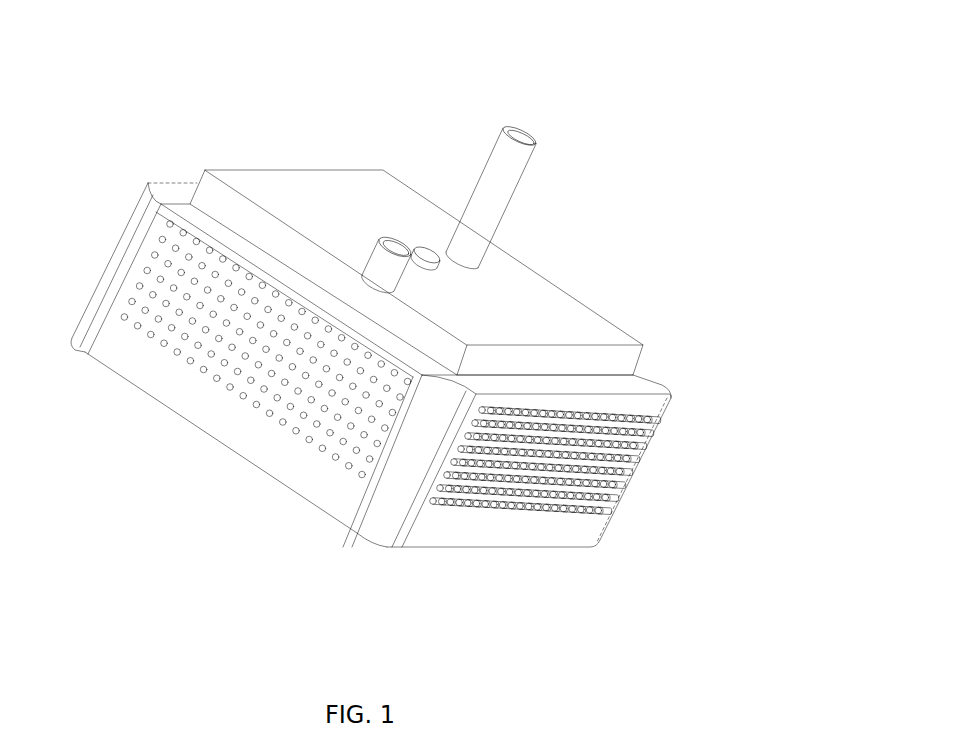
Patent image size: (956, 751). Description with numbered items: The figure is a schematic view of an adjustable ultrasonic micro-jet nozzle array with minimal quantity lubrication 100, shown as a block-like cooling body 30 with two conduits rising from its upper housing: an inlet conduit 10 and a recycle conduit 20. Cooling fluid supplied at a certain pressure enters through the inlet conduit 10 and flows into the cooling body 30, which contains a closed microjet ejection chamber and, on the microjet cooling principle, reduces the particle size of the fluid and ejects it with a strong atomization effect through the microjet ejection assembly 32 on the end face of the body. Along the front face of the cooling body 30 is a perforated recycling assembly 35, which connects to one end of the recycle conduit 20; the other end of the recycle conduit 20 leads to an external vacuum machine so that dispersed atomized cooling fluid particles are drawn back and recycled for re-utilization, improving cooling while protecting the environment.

The adjustable ultrasonic micro-jet nozzle array with minimal quantity lubrication 100 is at (344, 34).
The inlet conduit 10 is at (491, 192).
The recycle conduit 20 is at (383, 238).
The cooling body 30 is at (538, 315).
The microjet ejection assembly 32 is at (545, 525).
The recycling assembly 35 is at (176, 383).